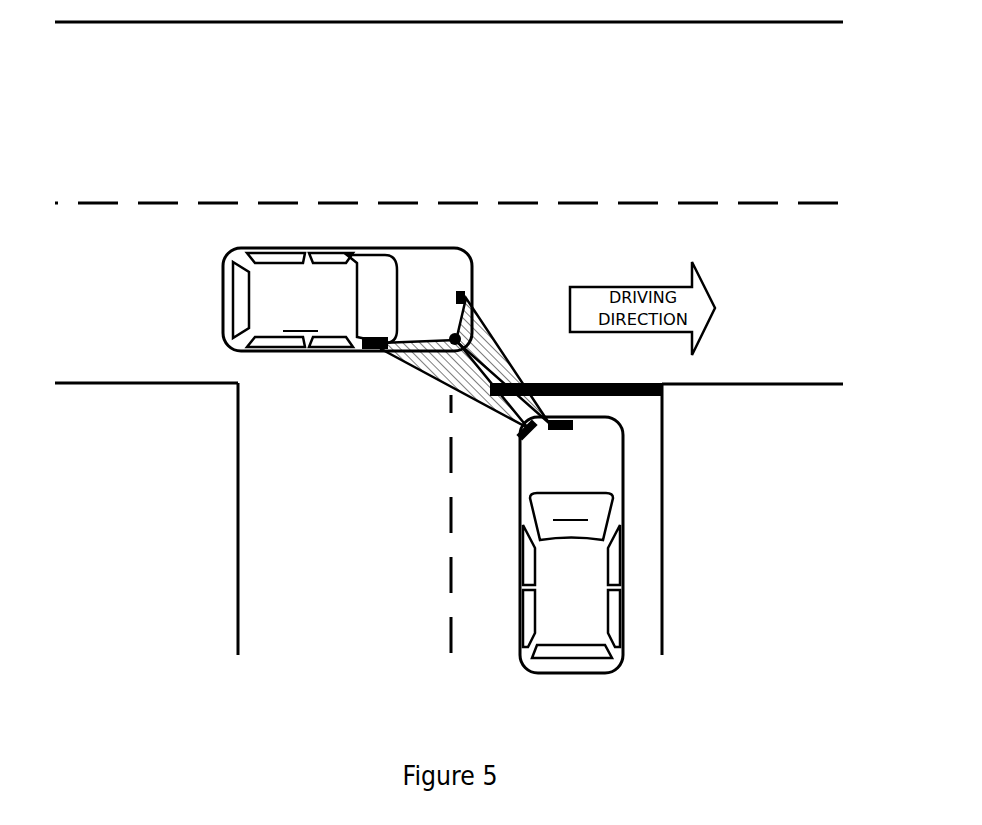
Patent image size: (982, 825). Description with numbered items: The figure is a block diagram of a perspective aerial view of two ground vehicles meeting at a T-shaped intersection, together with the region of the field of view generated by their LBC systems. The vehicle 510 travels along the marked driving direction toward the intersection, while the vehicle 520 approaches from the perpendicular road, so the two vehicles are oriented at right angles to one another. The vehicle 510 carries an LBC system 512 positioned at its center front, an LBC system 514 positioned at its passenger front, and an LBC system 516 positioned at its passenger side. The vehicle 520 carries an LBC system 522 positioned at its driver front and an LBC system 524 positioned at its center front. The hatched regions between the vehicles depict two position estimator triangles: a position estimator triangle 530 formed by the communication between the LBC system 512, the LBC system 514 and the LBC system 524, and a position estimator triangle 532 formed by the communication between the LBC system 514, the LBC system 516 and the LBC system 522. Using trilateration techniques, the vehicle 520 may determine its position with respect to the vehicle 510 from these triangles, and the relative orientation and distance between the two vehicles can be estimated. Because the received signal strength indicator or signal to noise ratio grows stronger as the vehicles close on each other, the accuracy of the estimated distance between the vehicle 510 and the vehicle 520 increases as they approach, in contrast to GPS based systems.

The vehicle 510 is at (347, 299).
The LBC system 512 is at (474, 277).
The LBC system 514 is at (448, 323).
The LBC system 516 is at (362, 361).
The vehicle 520 is at (571, 545).
The LBC system 522 is at (513, 455).
The LBC system 524 is at (591, 438).
The position estimator triangle 530 is at (487, 333).
The position estimator triangle 532 is at (423, 377).